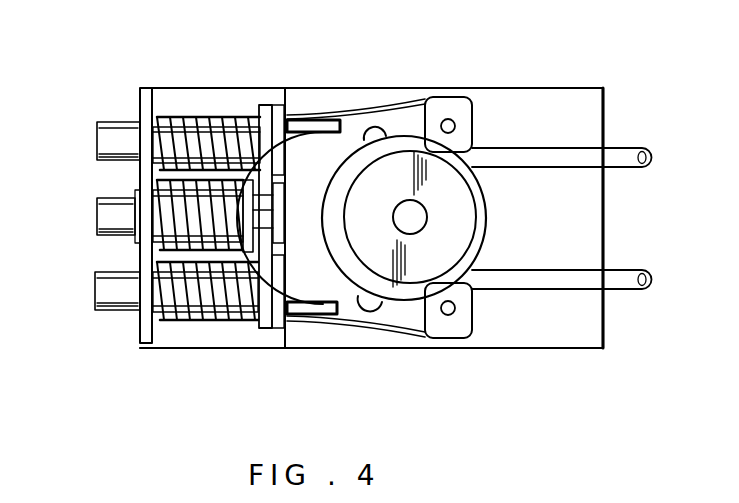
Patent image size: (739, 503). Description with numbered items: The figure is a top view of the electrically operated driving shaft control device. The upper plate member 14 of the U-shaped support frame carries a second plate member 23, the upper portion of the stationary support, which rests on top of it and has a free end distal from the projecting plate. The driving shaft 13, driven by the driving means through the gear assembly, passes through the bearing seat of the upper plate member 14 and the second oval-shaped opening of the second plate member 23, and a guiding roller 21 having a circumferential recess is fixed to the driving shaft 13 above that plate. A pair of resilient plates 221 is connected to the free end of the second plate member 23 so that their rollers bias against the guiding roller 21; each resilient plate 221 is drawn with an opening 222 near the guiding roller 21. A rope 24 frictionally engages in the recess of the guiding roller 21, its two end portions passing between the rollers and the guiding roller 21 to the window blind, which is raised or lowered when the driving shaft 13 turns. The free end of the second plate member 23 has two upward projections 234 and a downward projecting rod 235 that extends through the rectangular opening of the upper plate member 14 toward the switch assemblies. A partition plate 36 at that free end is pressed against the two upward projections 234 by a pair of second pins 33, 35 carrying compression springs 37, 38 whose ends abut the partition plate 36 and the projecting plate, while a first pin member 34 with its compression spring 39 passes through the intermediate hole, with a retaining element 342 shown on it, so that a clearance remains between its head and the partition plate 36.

The driving shaft 13 is at (420, 216).
The upper plate member 14 is at (205, 98).
The guiding roller 21 is at (370, 250).
The second plate member 23 is at (548, 95).
The rope 24 is at (630, 150).
The second pin 33 is at (118, 125).
The first pin member 34 is at (112, 232).
The second pin 35 is at (112, 308).
The partition plate 36 is at (266, 106).
The compression spring 37 is at (170, 117).
The compression spring 38 is at (178, 192).
The compression spring 39 is at (170, 318).
The resilient plate 221 is at (440, 100).
The pivot hole 222 is at (458, 127).
The upward projection 234 is at (313, 119).
The downward projecting rod 235 is at (280, 215).
The spacer 342 is at (257, 203).